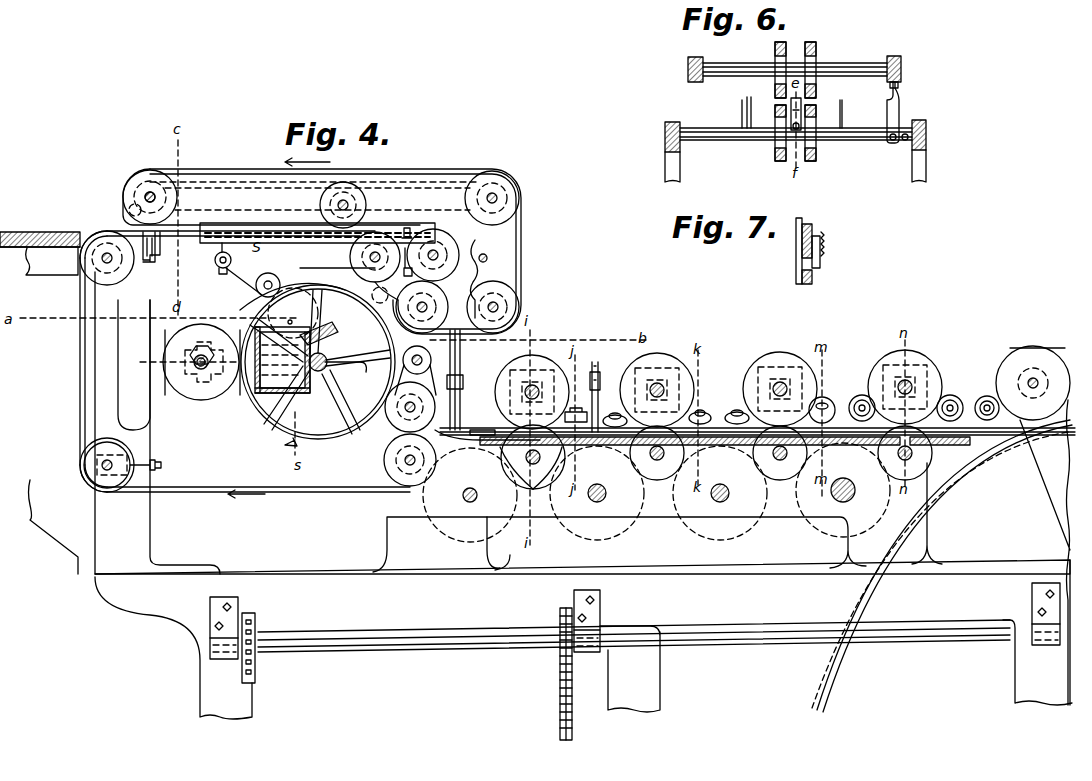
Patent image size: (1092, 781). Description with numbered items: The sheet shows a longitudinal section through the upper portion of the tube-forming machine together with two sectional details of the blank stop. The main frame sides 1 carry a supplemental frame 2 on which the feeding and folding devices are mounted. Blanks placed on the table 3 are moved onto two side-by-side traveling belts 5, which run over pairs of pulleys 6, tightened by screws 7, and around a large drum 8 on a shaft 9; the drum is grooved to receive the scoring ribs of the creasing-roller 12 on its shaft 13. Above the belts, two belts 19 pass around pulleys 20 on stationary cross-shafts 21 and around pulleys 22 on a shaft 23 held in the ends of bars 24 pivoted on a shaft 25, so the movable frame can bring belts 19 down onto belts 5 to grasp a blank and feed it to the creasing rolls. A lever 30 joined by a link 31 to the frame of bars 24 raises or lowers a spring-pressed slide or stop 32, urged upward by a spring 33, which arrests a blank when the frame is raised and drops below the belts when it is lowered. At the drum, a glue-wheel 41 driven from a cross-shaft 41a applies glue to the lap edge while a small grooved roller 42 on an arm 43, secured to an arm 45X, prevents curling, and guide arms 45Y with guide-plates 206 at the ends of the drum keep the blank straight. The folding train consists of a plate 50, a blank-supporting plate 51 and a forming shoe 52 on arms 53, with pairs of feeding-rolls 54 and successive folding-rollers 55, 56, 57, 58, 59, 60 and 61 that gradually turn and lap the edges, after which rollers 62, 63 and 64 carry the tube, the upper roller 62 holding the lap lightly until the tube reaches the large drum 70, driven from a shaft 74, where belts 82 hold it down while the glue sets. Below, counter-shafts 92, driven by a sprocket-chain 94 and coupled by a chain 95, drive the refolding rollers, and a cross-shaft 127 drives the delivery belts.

In FIG. 4, the sides of main frame 1 is at (582, 632).
In FIG. 4, the supplemental frame 2 is at (658, 493).
In FIG. 6, the supplemental frame 2 is at (680, 158).
In FIG. 4, the table 3 is at (24, 232).
In FIG. 4, the traveling belts 5 is at (125, 231).
In FIG. 6, the traveling belts 5 is at (817, 108).
In FIG. 4, the pulleys 6 is at (118, 280).
In FIG. 6, the pulleys 6 is at (817, 118).
In FIG. 4, the screws 7 is at (162, 465).
In FIG. 4, the roller or drum 8 is at (268, 416).
In FIG. 4, the shaft 9 is at (326, 358).
In FIG. 4, the creasing-roller 12 is at (201, 362).
In FIG. 4, the shaft 13 is at (203, 370).
In FIG. 4, the belts 19 is at (395, 170).
In FIG. 6, the belts 19 is at (782, 44).
In FIG. 4, the pulleys 20 is at (440, 300).
In FIG. 4, the cross-shafts 21 is at (440, 254).
In FIG. 4, the pulleys 22 is at (140, 180).
In FIG. 6, the pulleys 22 is at (775, 52).
In FIG. 4, the shaft 23 is at (147, 196).
In FIG. 6, the shaft 23 is at (795, 62).
In FIG. 4, the bars 24 is at (316, 205).
In FIG. 6, the bars 24 is at (911, 63).
In FIG. 4, the shaft 25 is at (500, 198).
In FIG. 6, the lever 30 is at (858, 136).
In FIG. 7, the lever 30 is at (813, 280).
In FIG. 6, the link 31 is at (899, 106).
In FIG. 6, the slide or stop 32 is at (790, 106).
In FIG. 7, the slide or stop 32 is at (796, 250).
In FIG. 7, the spring 33 is at (823, 241).
In FIG. 4, the glue-wheel 41 is at (300, 306).
In FIG. 4, the cross-shaft 41a is at (305, 321).
In FIG. 4, the grooved roller 42 is at (272, 276).
In FIG. 4, the arm 43 is at (240, 281).
In FIG. 4, the arm or stud 45X is at (215, 262).
In FIG. 4, the arms 45Y is at (232, 247).
In FIG. 4, the plate 50 is at (474, 442).
In FIG. 4, the blank-supporting plate 51 is at (735, 446).
In FIG. 4, the forming plate or shoe 52 is at (757, 425).
In FIG. 4, the arms 53 is at (478, 430).
In FIG. 4, the feeding-rolls 54 is at (656, 420).
In FIG. 4, the folding-rollers 55 is at (552, 480).
In FIG. 4, the folding-rollers 56 is at (581, 407).
In FIG. 4, the folding-rollers 57 is at (615, 409).
In FIG. 4, the folding-rollers 58 is at (707, 407).
In FIG. 4, the folding-rollers 59 is at (738, 406).
In FIG. 4, the folding-rollers 60 is at (824, 406).
In FIG. 4, the folding-rollers 61 is at (862, 402).
In FIG. 4, the upper roller 62 is at (935, 362).
In FIG. 4, the roller 63 is at (953, 401).
In FIG. 4, the roller 64 is at (988, 396).
In FIG. 4, the drum or wheel 70 is at (985, 448).
In FIG. 4, the shaft 74 is at (856, 490).
In FIG. 4, the conveying and holding belts 82 is at (1033, 516).
In FIG. 4, the counter-shafts 92 is at (450, 644).
In FIG. 4, the sprocket-chain 94 is at (560, 700).
In FIG. 4, the chain 95 is at (255, 680).
In FIG. 4, the cross-shaft 127 is at (470, 495).
In FIG. 4, the guide-plates 206 is at (292, 291).